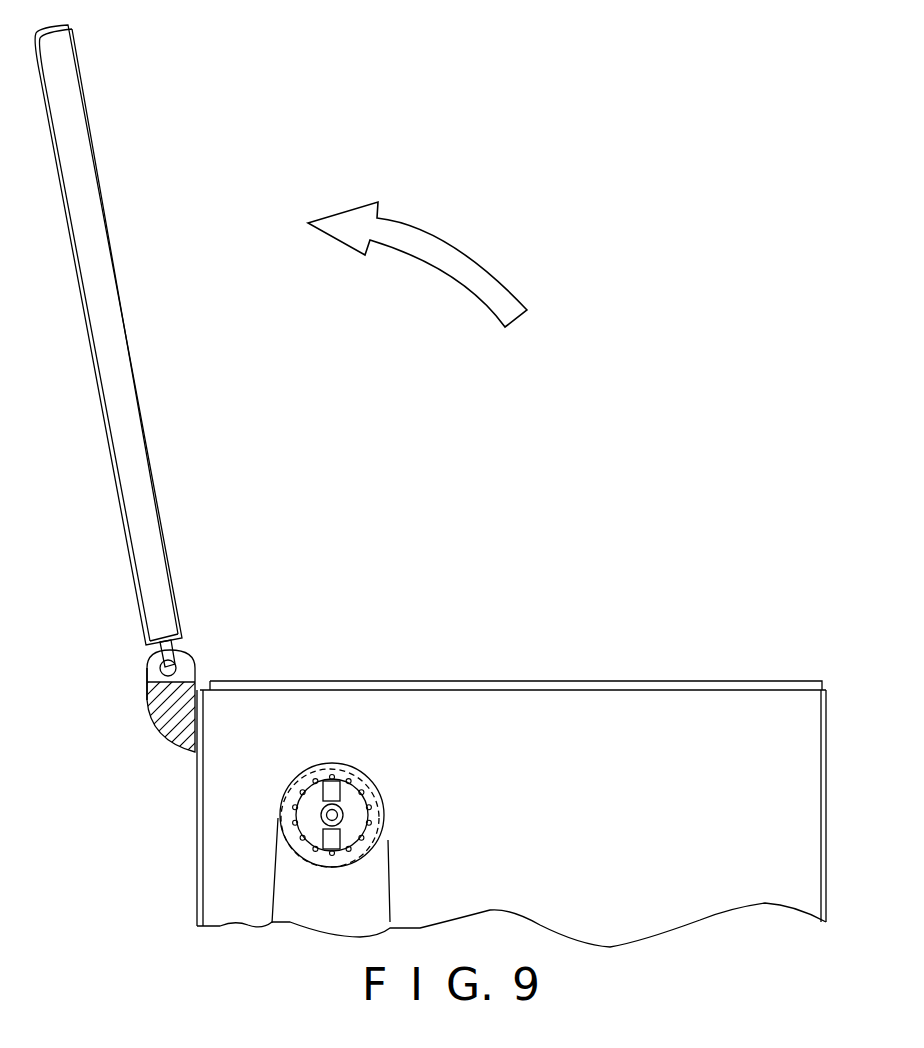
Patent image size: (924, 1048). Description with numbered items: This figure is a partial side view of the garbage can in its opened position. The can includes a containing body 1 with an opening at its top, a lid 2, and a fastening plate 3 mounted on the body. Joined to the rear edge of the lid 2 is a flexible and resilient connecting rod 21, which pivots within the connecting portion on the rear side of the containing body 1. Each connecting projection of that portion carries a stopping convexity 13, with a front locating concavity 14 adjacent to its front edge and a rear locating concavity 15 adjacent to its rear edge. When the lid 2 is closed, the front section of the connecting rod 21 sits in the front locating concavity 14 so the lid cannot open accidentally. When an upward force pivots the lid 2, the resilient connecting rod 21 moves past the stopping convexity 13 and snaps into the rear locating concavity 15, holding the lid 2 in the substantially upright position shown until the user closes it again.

The containing body 1 is at (667, 713).
The lid 2 is at (108, 346).
The fastening plate 3 is at (375, 865).
The stopping convexity 13 is at (180, 657).
The front locating concavity 14 is at (188, 672).
The rear locating concavity 15 is at (150, 665).
The connecting rod 21 is at (160, 650).